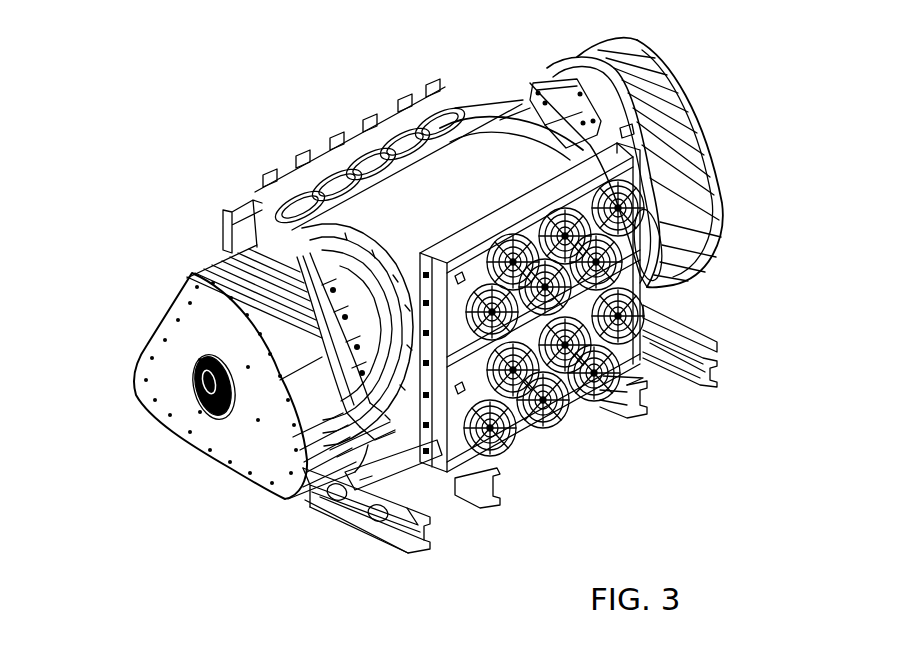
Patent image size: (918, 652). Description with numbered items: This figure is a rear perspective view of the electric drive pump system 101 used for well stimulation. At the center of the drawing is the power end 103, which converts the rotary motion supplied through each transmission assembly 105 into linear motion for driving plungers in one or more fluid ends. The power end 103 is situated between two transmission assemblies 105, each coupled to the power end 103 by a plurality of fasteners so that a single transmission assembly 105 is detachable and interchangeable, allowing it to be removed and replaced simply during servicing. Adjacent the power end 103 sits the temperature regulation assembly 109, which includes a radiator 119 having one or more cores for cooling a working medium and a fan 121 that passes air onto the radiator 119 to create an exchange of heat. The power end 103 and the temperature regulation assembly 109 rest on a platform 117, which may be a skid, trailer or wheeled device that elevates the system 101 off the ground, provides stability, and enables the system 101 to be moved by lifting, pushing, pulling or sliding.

The electric drive pump system 101 is at (217, 110).
The power end 103 is at (416, 226).
The transmission assembly 105 is at (159, 298).
The temperature regulation assembly 109 is at (583, 437).
The platform 117 is at (377, 524).
The radiator 119 is at (493, 217).
The fan 121 is at (549, 431).